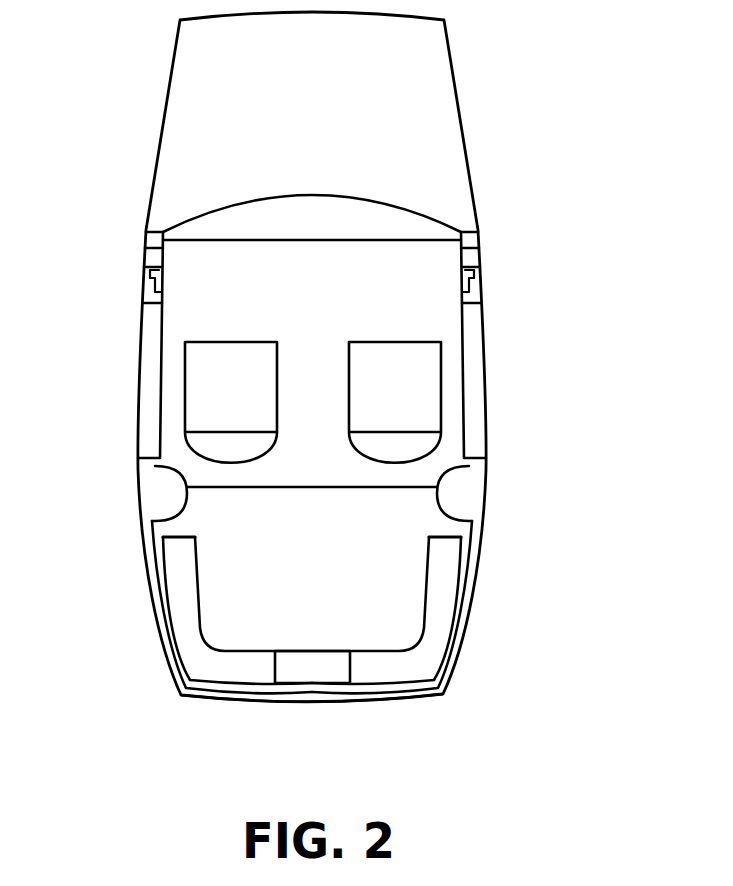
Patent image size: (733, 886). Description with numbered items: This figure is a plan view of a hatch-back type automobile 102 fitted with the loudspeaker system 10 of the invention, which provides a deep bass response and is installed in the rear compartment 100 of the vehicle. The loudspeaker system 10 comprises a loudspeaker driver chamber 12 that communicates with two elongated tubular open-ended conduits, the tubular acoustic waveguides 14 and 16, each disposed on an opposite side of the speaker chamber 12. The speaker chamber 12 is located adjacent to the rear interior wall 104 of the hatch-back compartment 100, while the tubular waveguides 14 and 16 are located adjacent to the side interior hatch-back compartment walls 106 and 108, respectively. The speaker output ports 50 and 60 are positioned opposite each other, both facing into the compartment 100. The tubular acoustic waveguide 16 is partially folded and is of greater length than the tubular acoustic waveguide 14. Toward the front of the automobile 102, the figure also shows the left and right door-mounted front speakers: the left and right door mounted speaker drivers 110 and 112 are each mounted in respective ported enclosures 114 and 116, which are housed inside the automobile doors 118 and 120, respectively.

The hatch-back type automobile 102 is at (432, 95).
The left door mounted speaker driver 110 is at (150, 271).
The right door mounted speaker driver 112 is at (483, 275).
The ported enclosure 114 is at (140, 293).
The ported enclosure 116 is at (480, 300).
The automobile door 118 is at (145, 335).
The automobile door 120 is at (481, 339).
The rear compartment 100 is at (415, 535).
The side interior hatch-back compartment wall 108 is at (155, 578).
The side interior hatch-back compartment wall 106 is at (475, 615).
The speaker output port 60 is at (193, 553).
The speaker output port 50 is at (437, 555).
The loudspeaker system 10 is at (214, 634).
The loudspeaker driver chamber 12 is at (298, 663).
The tubular acoustic waveguide 14 is at (445, 596).
The tubular acoustic waveguide 16 is at (185, 608).
The rear interior wall 104 is at (312, 694).